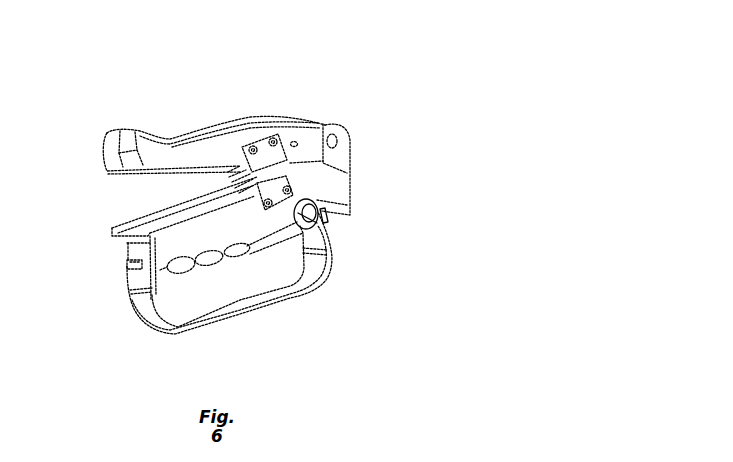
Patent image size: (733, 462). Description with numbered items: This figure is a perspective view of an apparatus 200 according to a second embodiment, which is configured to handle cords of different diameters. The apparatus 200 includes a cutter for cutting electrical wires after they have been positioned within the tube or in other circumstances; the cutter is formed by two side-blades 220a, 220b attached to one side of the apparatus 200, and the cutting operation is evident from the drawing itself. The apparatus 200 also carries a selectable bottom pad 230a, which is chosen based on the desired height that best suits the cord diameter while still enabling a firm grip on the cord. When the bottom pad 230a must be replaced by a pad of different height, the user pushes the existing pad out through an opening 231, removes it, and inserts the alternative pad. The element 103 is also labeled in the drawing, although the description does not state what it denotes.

The apparatus 200 is at (470, 113).
The side-blade 220a is at (266, 141).
The side-blade 220b is at (300, 170).
The opening 231 is at (320, 200).
The lower handle assembly 103 is at (130, 252).
The bottom pad 230a is at (322, 223).